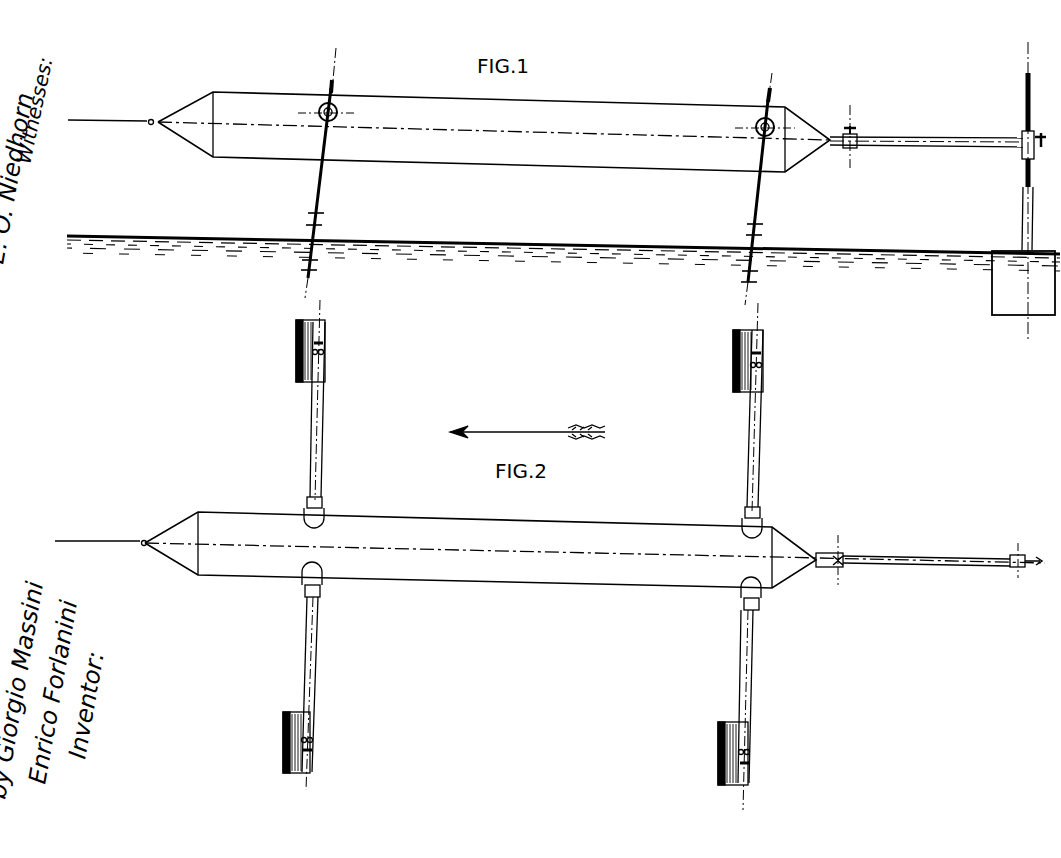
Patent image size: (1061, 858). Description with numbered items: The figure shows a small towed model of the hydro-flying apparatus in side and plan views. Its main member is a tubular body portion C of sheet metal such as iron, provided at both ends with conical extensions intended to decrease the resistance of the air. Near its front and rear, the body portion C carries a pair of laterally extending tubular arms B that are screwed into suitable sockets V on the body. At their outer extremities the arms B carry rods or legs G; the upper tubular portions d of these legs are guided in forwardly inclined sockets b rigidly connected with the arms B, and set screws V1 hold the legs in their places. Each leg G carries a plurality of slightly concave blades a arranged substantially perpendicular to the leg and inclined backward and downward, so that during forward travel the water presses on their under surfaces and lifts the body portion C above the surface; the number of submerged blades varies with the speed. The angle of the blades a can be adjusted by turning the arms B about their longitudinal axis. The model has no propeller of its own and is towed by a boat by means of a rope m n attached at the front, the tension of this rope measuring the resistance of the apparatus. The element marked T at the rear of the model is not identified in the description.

In FIG. 1, the rope m is at (95, 119).
In FIG. 2, the rope m is at (84, 542).
In FIG. 1, the rope n is at (146, 110).
In FIG. 2, the rope n is at (136, 531).
In FIG. 1, the tubular body portion C is at (494, 132).
In FIG. 2, the tubular body portion C is at (595, 550).
In FIG. 1, the tubular arms B is at (546, 117).
In FIG. 2, the tubular arms B is at (522, 555).
In FIG. 1, the rods or legs G is at (533, 176).
In FIG. 1, the blades a is at (543, 250).
In FIG. 2, the blades a is at (507, 552).
In FIG. 1, the sockets b is at (322, 106).
In FIG. 1, the upper tubular portions d is at (549, 84).
In FIG. 2, the upper tubular portions d is at (541, 554).
In FIG. 1, the rudder / tail T is at (942, 191).
In FIG. 2, the rudder / tail T is at (929, 559).
In FIG. 2, the sockets V is at (532, 555).
In FIG. 2, the set screws V1 is at (545, 555).